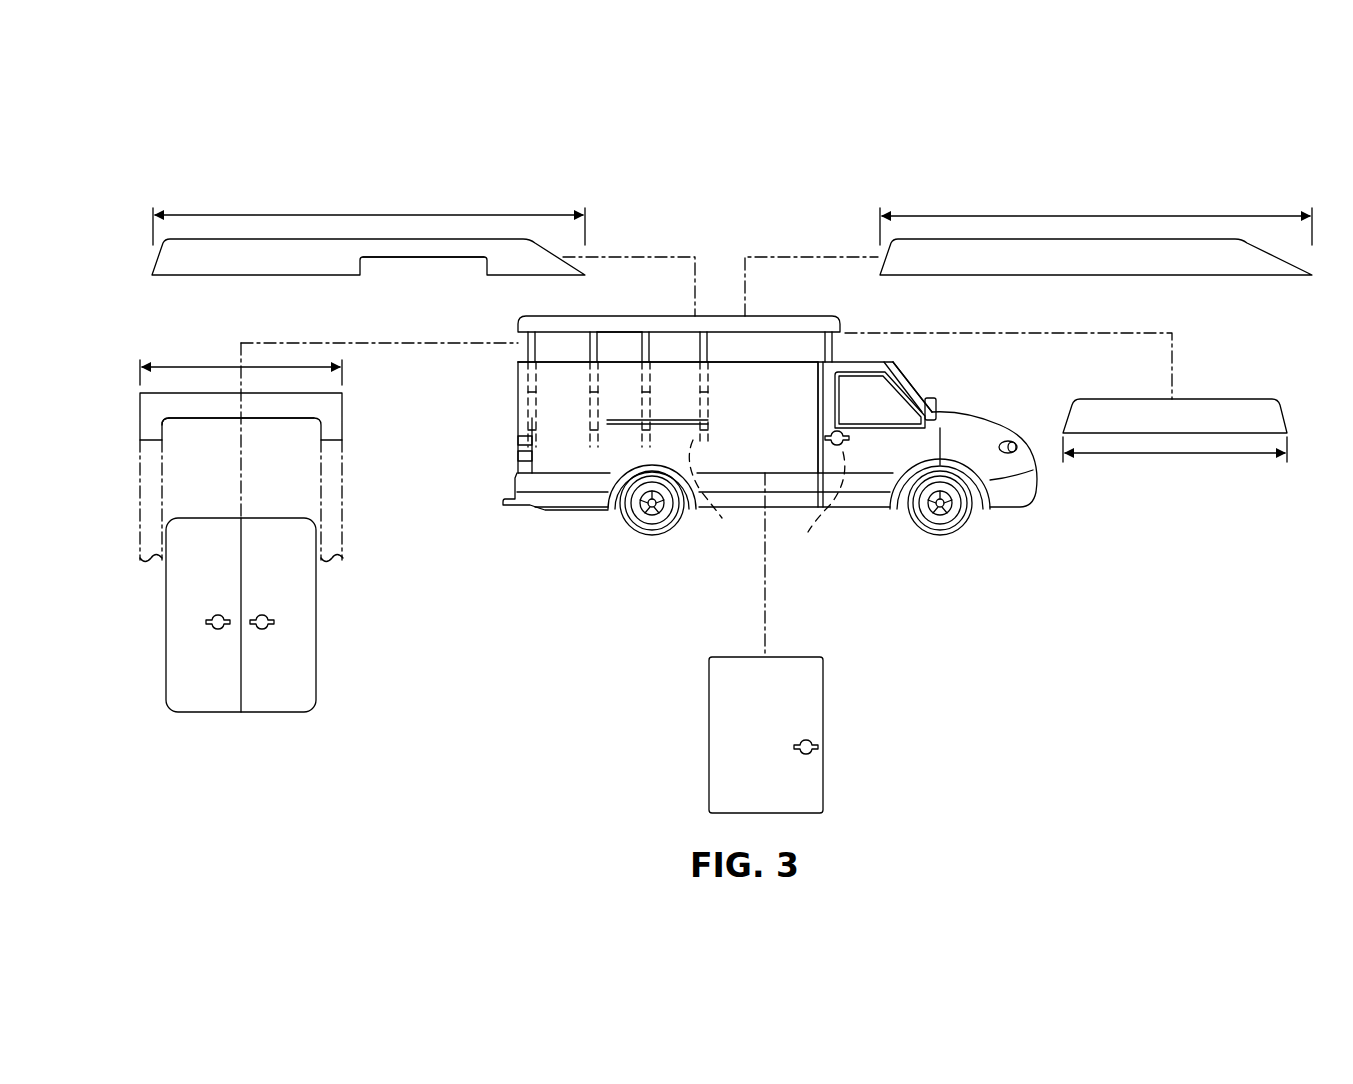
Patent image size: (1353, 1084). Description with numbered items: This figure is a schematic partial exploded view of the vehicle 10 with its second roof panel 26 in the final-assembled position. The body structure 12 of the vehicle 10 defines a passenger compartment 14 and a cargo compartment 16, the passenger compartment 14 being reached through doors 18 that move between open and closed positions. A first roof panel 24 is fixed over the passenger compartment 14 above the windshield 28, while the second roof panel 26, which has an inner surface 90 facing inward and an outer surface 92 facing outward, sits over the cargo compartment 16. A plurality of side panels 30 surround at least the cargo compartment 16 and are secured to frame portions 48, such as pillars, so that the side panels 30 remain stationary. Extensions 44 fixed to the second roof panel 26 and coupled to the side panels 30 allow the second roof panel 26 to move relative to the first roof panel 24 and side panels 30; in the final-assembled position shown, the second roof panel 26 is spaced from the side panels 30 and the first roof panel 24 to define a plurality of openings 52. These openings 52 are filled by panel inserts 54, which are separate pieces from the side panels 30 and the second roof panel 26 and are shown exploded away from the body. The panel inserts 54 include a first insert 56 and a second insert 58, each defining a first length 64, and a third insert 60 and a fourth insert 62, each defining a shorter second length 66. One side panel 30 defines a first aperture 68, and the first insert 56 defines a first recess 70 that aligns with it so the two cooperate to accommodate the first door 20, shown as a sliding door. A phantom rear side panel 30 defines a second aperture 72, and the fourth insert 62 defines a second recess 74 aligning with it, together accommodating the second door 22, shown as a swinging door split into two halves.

The vehicle 10 is at (988, 162).
The body structure 12 is at (781, 416).
The passenger compartment 14 is at (892, 413).
The cargo compartment 16 is at (590, 461).
The doors 18 is at (872, 458).
The first door 20 is at (823, 735).
The second door 22 is at (277, 712).
The first roof panel 24 is at (723, 355).
The second roof panel 26 is at (680, 334).
The windshield 28 is at (910, 372).
The side panels 30 is at (517, 397).
The extensions 44 is at (537, 347).
The frame portions 48 is at (726, 462).
The openings 52 is at (627, 346).
The panel inserts 54 is at (690, 236).
The first insert 56 is at (690, 236).
The second insert 58 is at (1240, 245).
The third insert 60 is at (726, 412).
The fourth insert 62 is at (237, 484).
The first length 64 is at (368, 215).
The second length 66 is at (1173, 455).
The first aperture 68 is at (798, 377).
The first recess 70 is at (422, 258).
The second aperture 72 is at (165, 473).
The second recess 74 is at (273, 420).
The inner surface 90 is at (722, 335).
The outer surface 92 is at (642, 316).